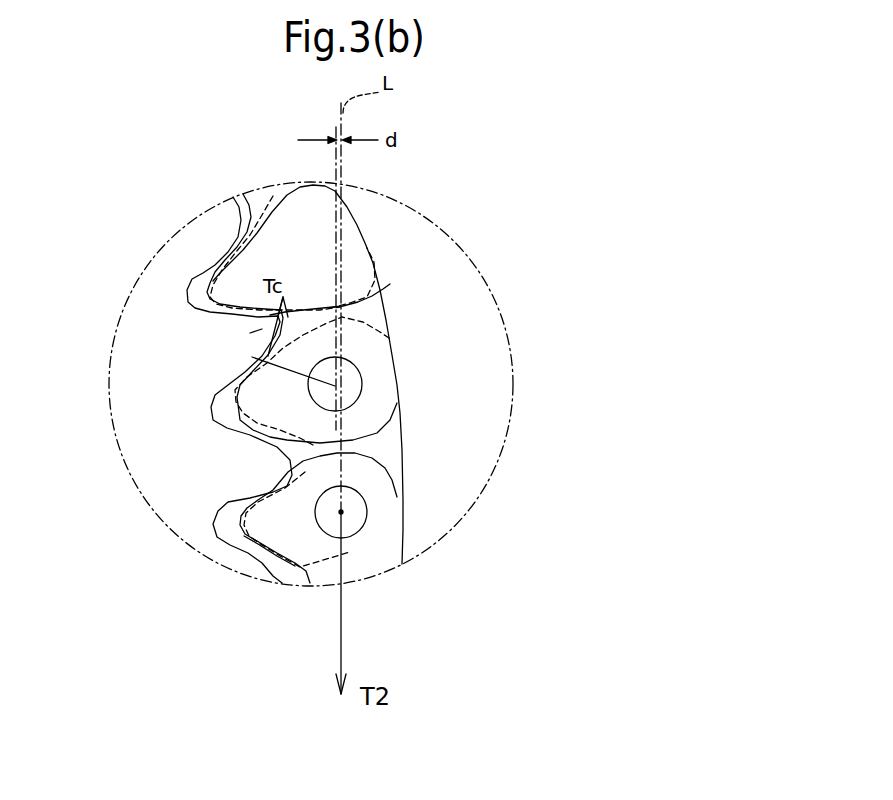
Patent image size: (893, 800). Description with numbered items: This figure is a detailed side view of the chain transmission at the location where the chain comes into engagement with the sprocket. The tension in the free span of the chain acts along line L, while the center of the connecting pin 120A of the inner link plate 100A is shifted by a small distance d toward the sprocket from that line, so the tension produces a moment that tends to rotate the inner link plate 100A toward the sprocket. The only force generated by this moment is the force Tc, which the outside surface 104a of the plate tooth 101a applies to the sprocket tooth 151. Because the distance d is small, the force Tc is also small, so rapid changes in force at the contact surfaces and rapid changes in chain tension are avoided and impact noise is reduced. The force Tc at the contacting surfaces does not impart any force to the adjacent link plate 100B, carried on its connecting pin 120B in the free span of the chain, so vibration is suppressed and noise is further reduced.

The inner link plate 100A is at (387, 448).
The link plate 100B is at (373, 550).
The connecting pin 120A is at (335, 386).
The connecting pin 120B is at (357, 513).
The plate tooth 101a is at (257, 397).
The outside surface 104a is at (252, 357).
The sprocket tooth 151 is at (250, 333).